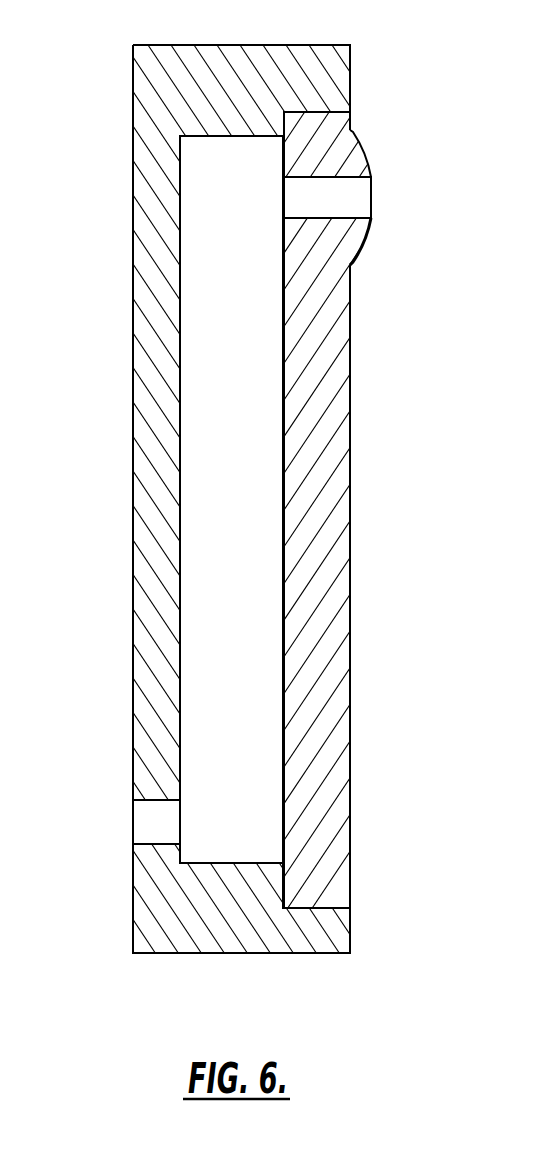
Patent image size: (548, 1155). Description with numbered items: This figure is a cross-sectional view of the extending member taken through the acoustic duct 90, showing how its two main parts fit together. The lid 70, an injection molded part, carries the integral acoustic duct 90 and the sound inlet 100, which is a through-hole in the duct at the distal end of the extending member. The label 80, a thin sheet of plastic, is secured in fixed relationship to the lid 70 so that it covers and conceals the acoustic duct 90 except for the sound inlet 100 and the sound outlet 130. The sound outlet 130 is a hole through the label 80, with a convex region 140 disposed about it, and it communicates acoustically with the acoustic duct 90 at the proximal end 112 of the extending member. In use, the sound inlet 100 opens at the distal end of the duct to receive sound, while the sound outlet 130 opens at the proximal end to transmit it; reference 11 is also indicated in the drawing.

The window assembly 11 is at (352, 908).
The lid 70 is at (334, 72).
The label 80 is at (322, 540).
The acoustic duct 90 is at (273, 695).
The sound inlet 100 is at (162, 828).
The proximal end 112 is at (132, 155).
The sound outlet 130 is at (344, 198).
The convex region 140 is at (366, 152).